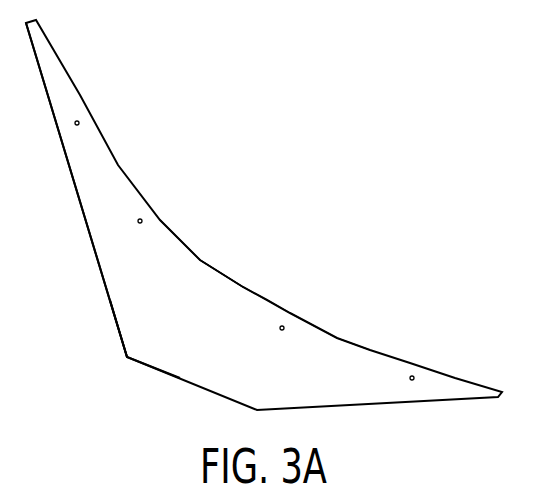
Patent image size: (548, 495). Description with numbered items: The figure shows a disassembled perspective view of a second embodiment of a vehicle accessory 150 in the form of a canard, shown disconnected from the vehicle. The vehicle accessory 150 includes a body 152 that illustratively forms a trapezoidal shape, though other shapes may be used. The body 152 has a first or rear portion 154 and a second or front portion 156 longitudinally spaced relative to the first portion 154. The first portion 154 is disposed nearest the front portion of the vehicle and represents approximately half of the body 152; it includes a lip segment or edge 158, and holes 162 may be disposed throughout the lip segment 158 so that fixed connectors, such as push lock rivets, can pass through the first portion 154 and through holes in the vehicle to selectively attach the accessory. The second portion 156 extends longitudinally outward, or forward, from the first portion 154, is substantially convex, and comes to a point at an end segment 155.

The vehicle accessory 150 is at (150, 128).
The body 152 is at (182, 300).
The first portion 154 is at (332, 352).
The end segment 155 is at (127, 357).
The second portion 156 is at (133, 313).
The lip segment 158 is at (243, 288).
The holes 162 is at (146, 212).